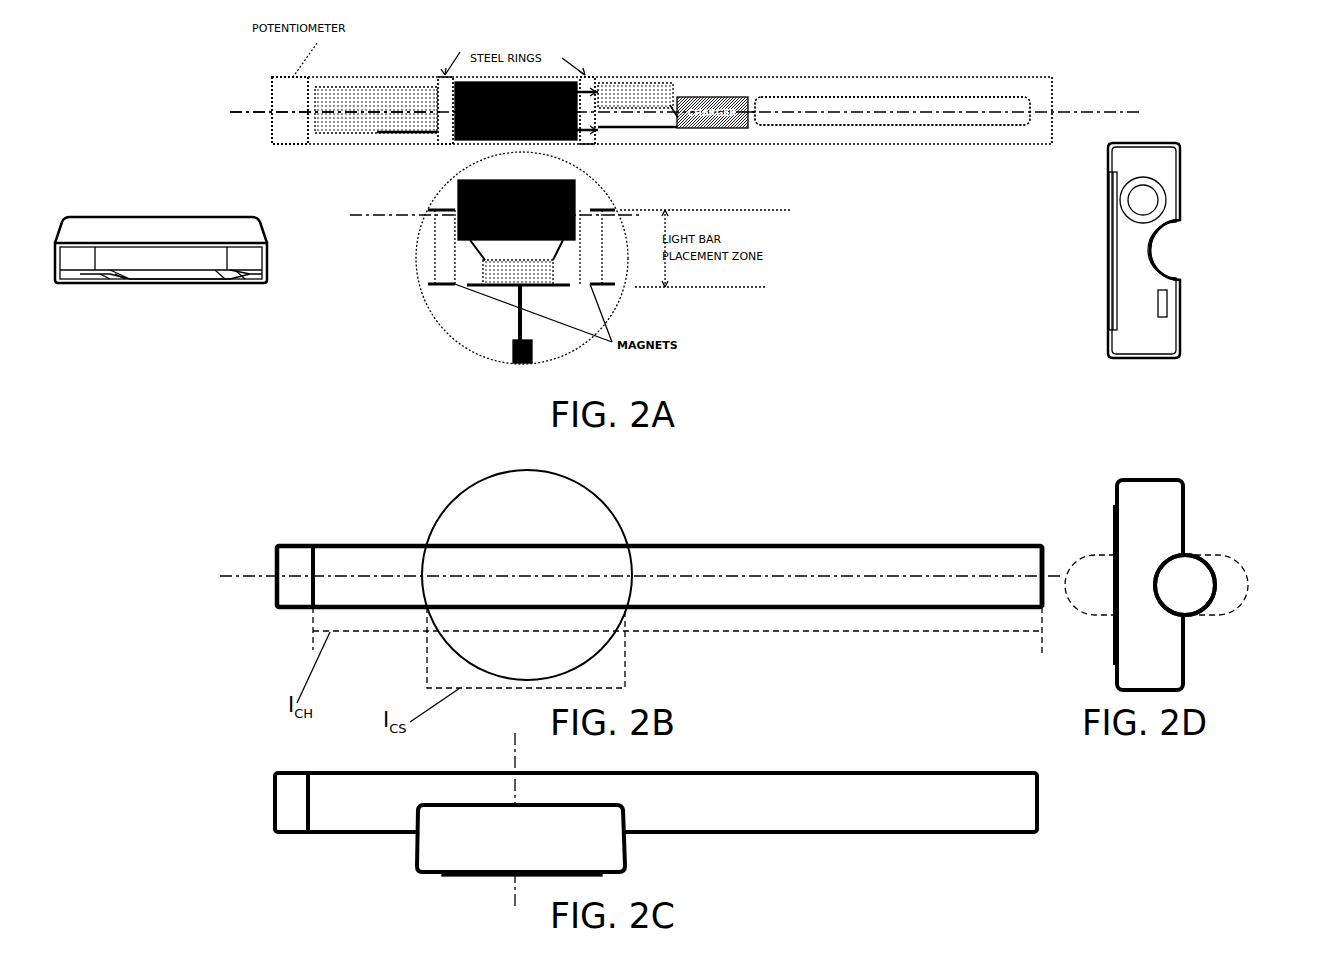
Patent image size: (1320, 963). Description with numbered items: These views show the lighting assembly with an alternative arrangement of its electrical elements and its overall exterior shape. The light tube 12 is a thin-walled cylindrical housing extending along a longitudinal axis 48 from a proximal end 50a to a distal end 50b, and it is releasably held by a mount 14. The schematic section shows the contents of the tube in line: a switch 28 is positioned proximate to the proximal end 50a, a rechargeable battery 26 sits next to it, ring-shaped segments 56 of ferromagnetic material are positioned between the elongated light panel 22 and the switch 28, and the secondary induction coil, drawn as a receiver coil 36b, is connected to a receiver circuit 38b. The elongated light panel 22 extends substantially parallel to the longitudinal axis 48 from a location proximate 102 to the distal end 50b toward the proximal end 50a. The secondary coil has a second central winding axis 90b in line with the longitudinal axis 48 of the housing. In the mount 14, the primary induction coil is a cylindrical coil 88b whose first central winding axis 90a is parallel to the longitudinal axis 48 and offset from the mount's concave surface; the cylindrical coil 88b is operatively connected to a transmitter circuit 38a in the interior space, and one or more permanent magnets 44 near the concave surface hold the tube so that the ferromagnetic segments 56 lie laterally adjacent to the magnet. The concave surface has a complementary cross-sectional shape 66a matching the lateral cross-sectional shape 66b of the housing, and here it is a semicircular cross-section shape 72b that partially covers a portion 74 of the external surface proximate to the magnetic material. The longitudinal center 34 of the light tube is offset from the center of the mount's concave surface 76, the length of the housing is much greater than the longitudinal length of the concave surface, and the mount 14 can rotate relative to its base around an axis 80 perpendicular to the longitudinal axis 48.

In FIG. 2D, the light tube 12 is at (1192, 600).
In FIG. 2D, the mount 14 is at (1136, 500).
In FIG. 2A, the elongated light panel 22 is at (840, 105).
In FIG. 2A, the rechargeable battery 26 is at (410, 93).
In FIG. 2A, the switch 28 is at (283, 95).
In FIG. 2D, the longitudinal center 34 is at (1185, 587).
In FIG. 2A, the receiver coil 36b is at (560, 85).
In FIG. 2A, the transmitter circuit 38a is at (483, 267).
In FIG. 2A, the receiver circuit 38b is at (652, 88).
In FIG. 2A, the permanent magnet 44 is at (1163, 300).
In FIG. 2B, the longitudinal axis 48 is at (880, 575).
In FIG. 2A, the proximal end 50a is at (308, 133).
In FIG. 2B, the proximal end 50a is at (303, 546).
In FIG. 2A, the distal end 50b is at (1052, 98).
In FIG. 2B, the distal end 50b is at (1023, 560).
In FIG. 2A, the ring-shaped segments 56 is at (537, 140).
In FIG. 2D, the complementary cross-sectional shape 66a is at (1253, 573).
In FIG. 2D, the lateral cross-sectional shape 66b is at (1098, 567).
In FIG. 2A, the semicircular cross-section shape 72b is at (1150, 253).
In FIG. 2B, the portion of the external surface 74 is at (550, 558).
In FIG. 2D, the center of the mount's concave surface 76 is at (1150, 582).
In FIG. 2C, the axis 80 is at (510, 890).
In FIG. 2A, the cylindrical coil 88b is at (460, 223).
In FIG. 2A, the first central winding axis 90a is at (781, 210).
In FIG. 2A, the second central winding axis 90b is at (245, 115).
In FIG. 2A, the location proximate to the distal end 102 is at (1017, 100).